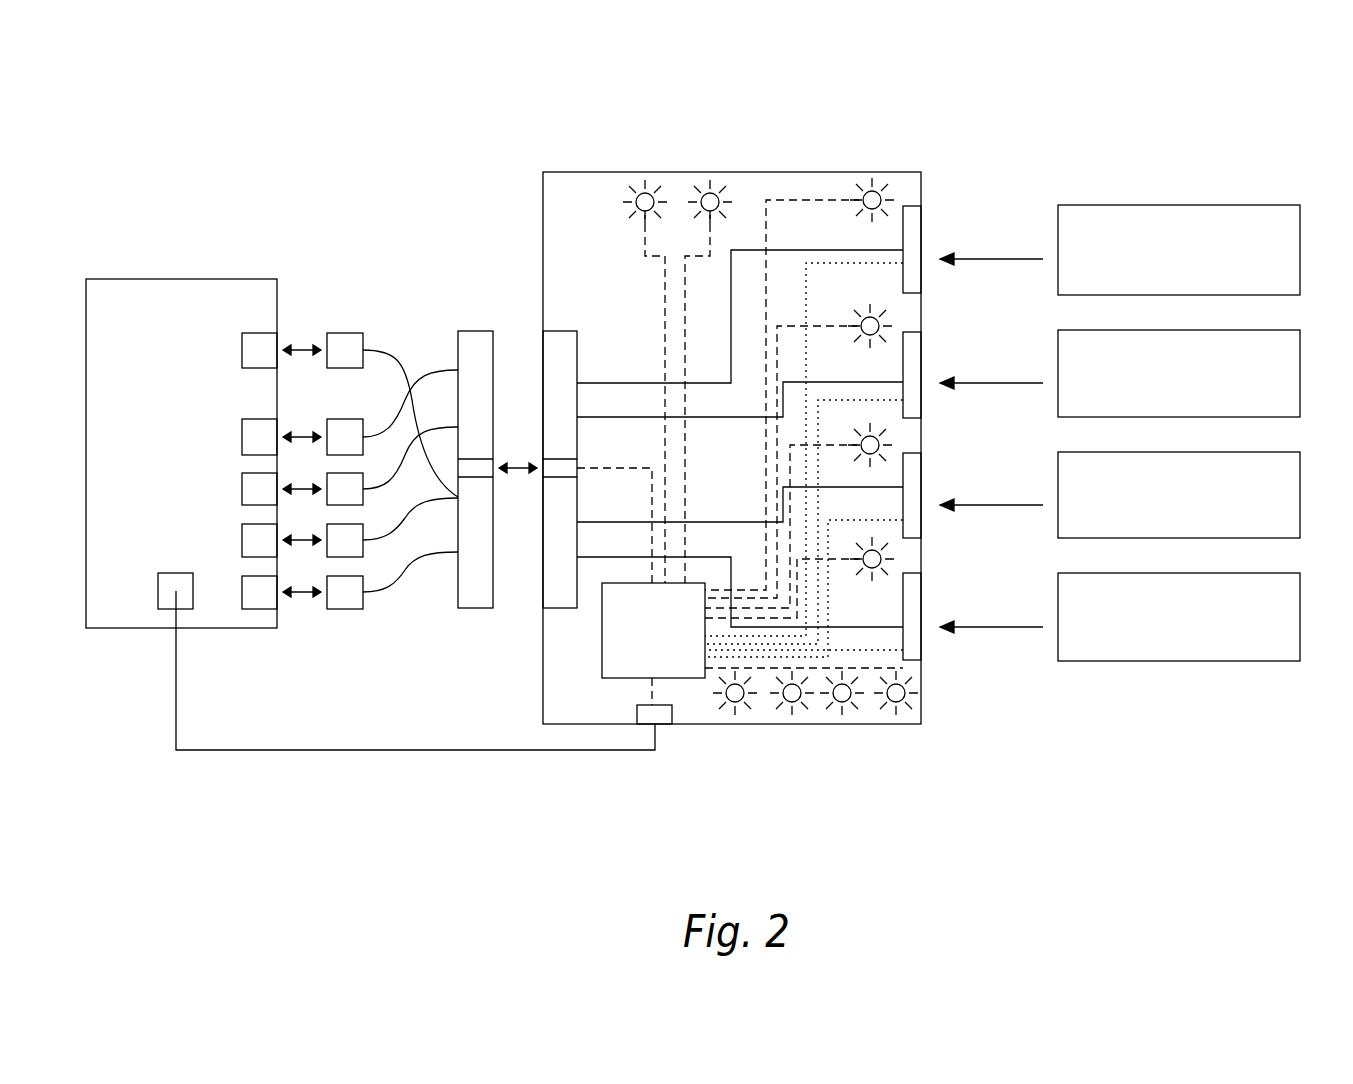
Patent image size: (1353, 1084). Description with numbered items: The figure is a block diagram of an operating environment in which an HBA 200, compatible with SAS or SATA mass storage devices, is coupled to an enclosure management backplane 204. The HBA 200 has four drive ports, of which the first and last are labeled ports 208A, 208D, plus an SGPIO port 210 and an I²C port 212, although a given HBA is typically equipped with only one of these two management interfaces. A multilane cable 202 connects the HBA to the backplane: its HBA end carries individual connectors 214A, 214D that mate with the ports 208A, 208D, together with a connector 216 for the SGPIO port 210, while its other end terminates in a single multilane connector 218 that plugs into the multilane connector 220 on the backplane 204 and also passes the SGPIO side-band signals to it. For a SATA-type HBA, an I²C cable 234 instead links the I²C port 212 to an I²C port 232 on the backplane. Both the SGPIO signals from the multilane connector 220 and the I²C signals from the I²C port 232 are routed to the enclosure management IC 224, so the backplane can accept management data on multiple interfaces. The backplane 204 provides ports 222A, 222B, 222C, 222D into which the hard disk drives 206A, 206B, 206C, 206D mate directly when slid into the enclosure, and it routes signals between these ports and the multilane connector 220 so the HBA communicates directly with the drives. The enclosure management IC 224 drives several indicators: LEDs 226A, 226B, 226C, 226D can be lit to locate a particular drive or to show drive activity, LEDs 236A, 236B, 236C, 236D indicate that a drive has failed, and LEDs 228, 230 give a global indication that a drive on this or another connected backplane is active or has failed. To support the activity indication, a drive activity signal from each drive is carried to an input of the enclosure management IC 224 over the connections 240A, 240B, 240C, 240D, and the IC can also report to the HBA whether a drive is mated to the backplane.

The HBA 200 is at (193, 268).
The multilane cable 202 is at (414, 330).
The enclosure management backplane 204 is at (792, 153).
The hard disk drive 206A is at (1186, 205).
The hard disk drive 206B is at (1058, 337).
The hard disk drive 206C is at (1058, 460).
The hard disk drive 206D is at (1180, 661).
The port 208A is at (272, 426).
The port 208D is at (258, 612).
The SGPIO port 210 is at (272, 336).
The I²C port 212 is at (163, 601).
The individual connector 214A is at (345, 446).
The individual connector 214D is at (345, 612).
The connector 216 is at (345, 340).
The multilane connector 218 is at (470, 612).
The multilane connector 220 is at (578, 333).
The port 222A is at (921, 232).
The port 222B is at (921, 372).
The port 222C is at (921, 497).
The port 222D is at (921, 617).
The enclosure management IC 224 is at (603, 650).
The LED 226A is at (876, 192).
The LED 226B is at (880, 322).
The LED 226C is at (880, 441).
The LED 226D is at (880, 555).
The LED 228 is at (652, 194).
The LED 230 is at (716, 194).
The I²C port 232 is at (662, 726).
The I²C cable 234 is at (508, 752).
The LED 236A is at (733, 715).
The LED 236B is at (790, 715).
The LED 236C is at (840, 715).
The LED 236D is at (896, 715).
The connection 240A is at (804, 449).
The connection 240B is at (804, 522).
The connection 240C is at (804, 576).
The connection 240D is at (804, 655).